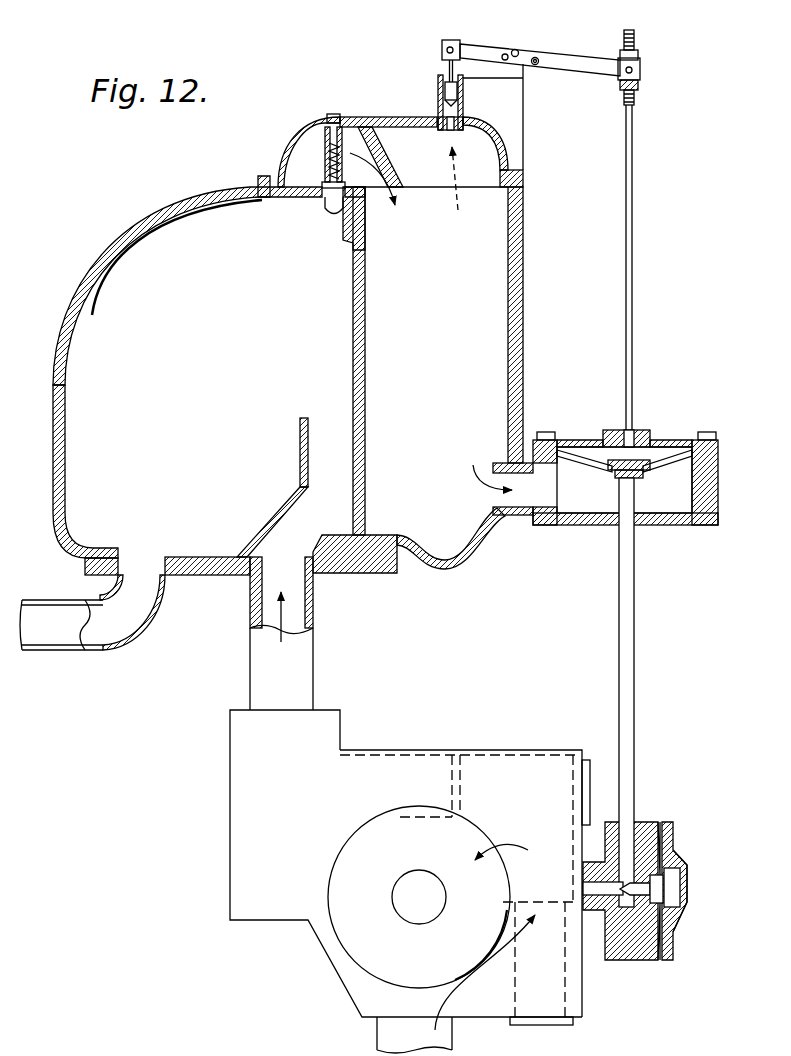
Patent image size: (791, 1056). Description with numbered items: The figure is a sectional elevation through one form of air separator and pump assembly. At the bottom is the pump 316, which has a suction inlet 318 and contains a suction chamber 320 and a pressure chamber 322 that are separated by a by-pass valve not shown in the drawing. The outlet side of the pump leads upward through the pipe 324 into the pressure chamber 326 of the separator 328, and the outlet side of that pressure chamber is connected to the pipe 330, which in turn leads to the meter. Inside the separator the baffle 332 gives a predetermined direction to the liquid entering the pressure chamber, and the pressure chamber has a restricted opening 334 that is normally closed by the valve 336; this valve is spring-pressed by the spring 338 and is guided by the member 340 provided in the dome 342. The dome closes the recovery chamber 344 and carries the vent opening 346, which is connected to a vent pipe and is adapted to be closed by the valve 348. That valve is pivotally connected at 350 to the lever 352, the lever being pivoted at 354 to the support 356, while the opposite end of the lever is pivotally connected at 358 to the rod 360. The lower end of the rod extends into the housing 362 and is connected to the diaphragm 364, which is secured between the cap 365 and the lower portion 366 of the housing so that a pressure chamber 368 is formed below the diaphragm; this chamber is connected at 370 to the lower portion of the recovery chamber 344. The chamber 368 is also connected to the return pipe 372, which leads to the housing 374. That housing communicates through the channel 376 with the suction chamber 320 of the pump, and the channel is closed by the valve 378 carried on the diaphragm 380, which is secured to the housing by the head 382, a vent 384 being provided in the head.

The pump 316 is at (248, 870).
The suction inlet 318 is at (385, 1025).
The suction chamber 320 is at (497, 763).
The pressure chamber 322 is at (300, 460).
The pipe 324 is at (262, 676).
The pressure chamber 326 is at (82, 310).
The separator 328 is at (122, 242).
The pipe 330 is at (143, 613).
The baffle 332 is at (375, 758).
The restricted opening 334 is at (333, 275).
The valve 336 is at (320, 200).
The spring 338 is at (325, 168).
The guide member 340 is at (312, 138).
The dome 342 is at (385, 125).
The recovery chamber 344 is at (498, 276).
The vent opening 346 is at (463, 122).
The valve 348 is at (440, 88).
The pivotal connection 350 is at (455, 44).
The lever 352 is at (518, 51).
The pivot 354 is at (540, 60).
The support 356 is at (510, 147).
The pivotal connection 358 is at (640, 72).
The rod 360 is at (632, 262).
The housing 362 is at (645, 440).
The diaphragm 364 is at (672, 456).
The cap 365 is at (603, 437).
The lower portion of housing 366 is at (716, 512).
The pressure chamber 368 is at (678, 488).
The connection 370 is at (537, 493).
The return pipe 372 is at (634, 655).
The housing 374 is at (640, 822).
The channel 376 is at (598, 886).
The valve 378 is at (637, 900).
The diaphragm 380 is at (662, 876).
The head 382 is at (674, 947).
The vent 384 is at (687, 918).